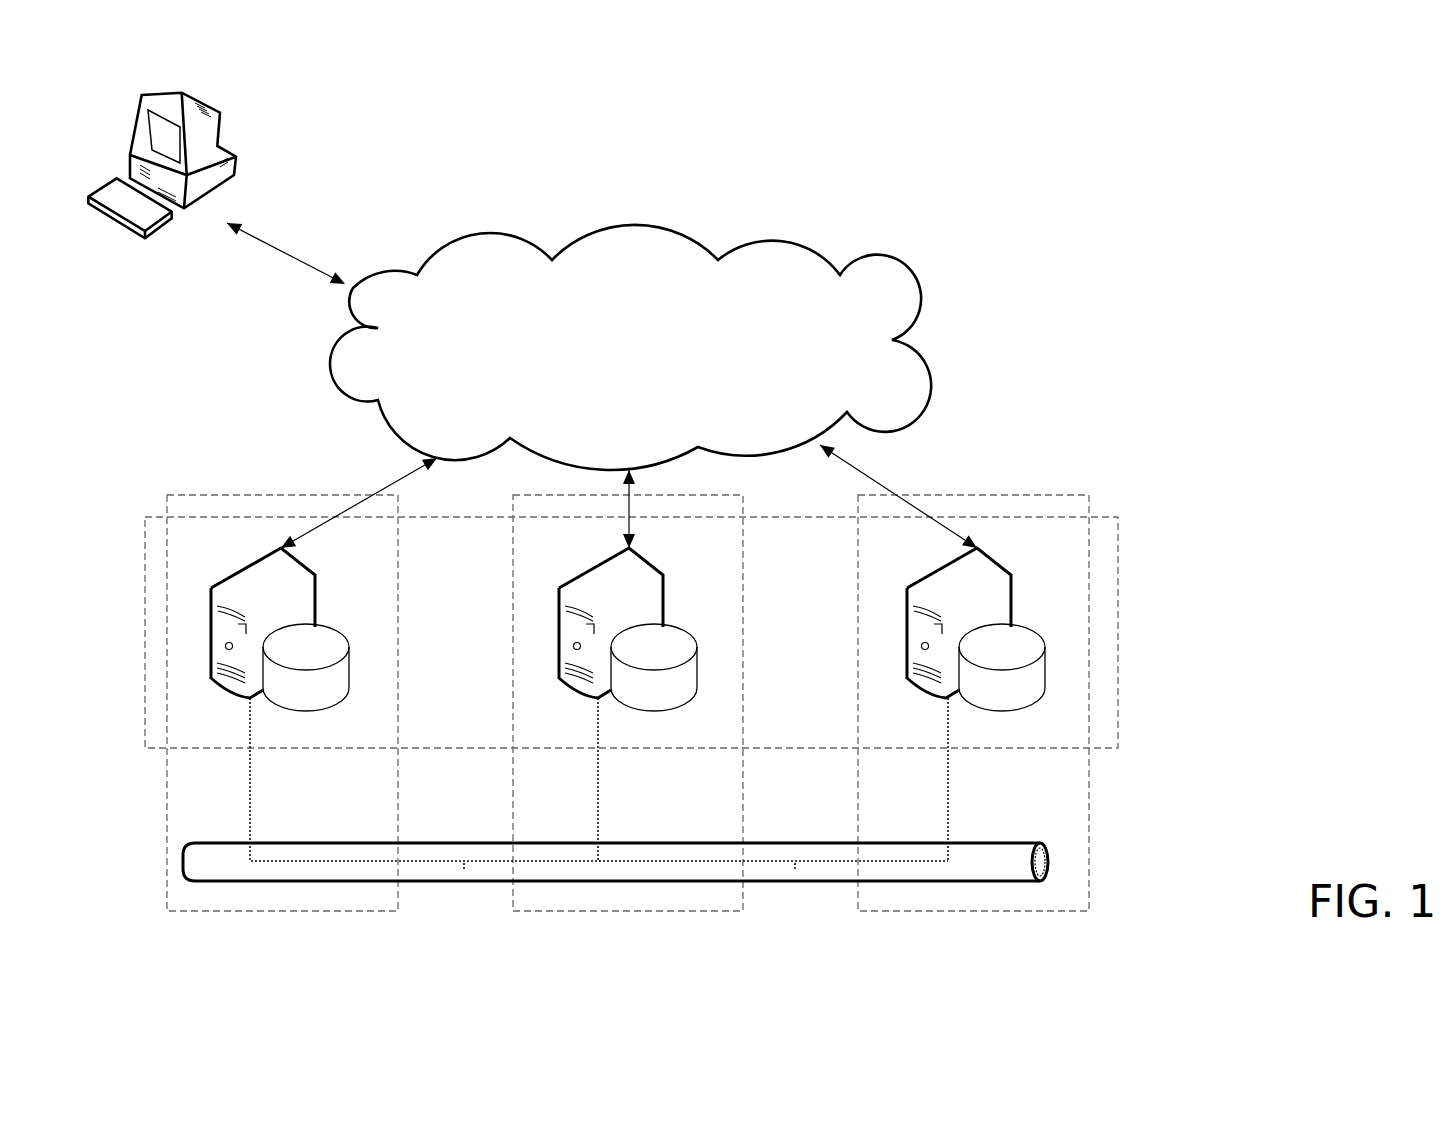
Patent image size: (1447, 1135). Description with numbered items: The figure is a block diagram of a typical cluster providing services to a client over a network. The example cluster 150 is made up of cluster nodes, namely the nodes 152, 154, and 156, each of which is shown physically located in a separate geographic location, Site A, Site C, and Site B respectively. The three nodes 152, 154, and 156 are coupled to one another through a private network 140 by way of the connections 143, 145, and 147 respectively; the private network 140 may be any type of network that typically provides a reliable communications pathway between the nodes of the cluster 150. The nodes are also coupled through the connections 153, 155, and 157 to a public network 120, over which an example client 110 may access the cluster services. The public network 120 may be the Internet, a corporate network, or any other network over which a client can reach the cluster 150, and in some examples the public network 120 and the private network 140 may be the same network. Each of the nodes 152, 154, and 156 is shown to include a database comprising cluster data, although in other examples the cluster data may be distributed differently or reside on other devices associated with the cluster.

The client 110 is at (220, 113).
The public network 120 is at (630, 347).
The private network 140 is at (1048, 860).
The connection 143 is at (417, 784).
The connection 145 is at (760, 784).
The connection 147 is at (959, 779).
The cluster 150 is at (1118, 517).
The cluster node 152 is at (211, 588).
The connection 153 is at (359, 503).
The cluster node 154 is at (559, 588).
The connection 155 is at (629, 509).
The cluster node 156 is at (1011, 575).
The connection 157 is at (899, 496).